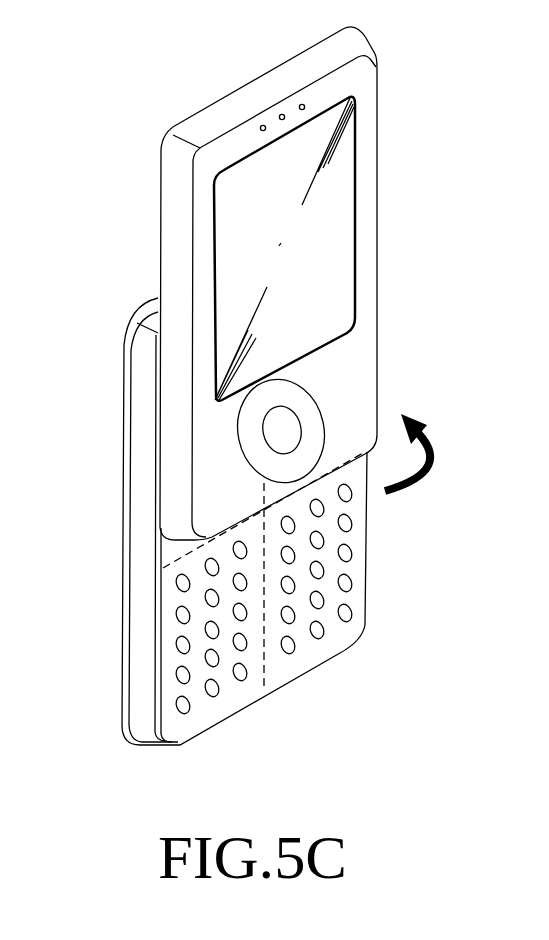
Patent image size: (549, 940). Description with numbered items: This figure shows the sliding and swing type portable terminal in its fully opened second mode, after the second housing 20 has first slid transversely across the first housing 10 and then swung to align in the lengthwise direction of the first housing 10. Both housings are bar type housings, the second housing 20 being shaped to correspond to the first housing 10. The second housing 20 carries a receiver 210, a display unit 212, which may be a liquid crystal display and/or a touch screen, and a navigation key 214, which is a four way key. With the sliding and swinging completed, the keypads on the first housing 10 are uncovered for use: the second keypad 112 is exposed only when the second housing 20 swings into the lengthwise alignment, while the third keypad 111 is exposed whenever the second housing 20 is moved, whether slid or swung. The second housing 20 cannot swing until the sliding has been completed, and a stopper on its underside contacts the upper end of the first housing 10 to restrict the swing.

The first housing 10 is at (104, 501).
The second housing 20 is at (403, 273).
The third keypad 111 is at (181, 640).
The second keypad 112 is at (362, 566).
The receiver 210 is at (282, 116).
The display unit 212 is at (338, 204).
The navigation key 214 is at (290, 428).